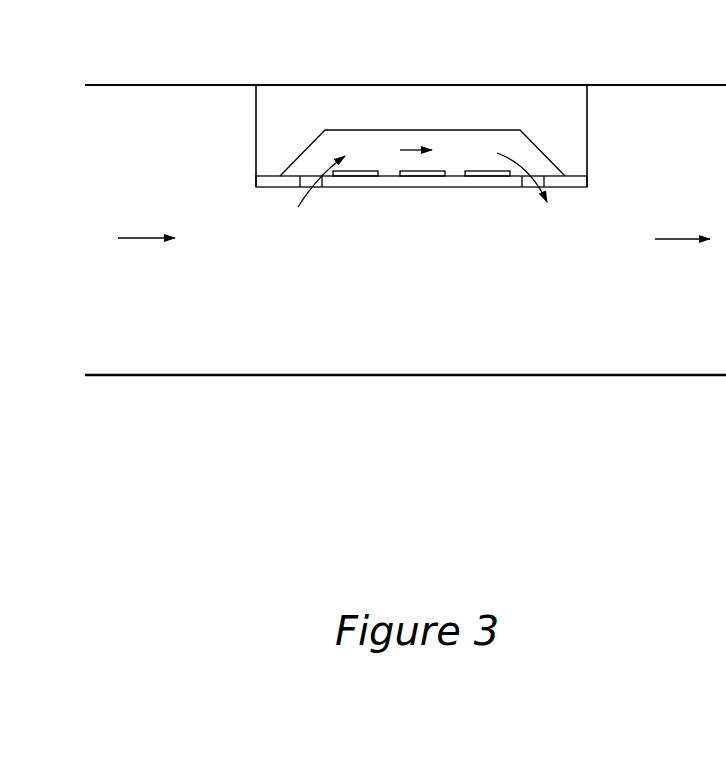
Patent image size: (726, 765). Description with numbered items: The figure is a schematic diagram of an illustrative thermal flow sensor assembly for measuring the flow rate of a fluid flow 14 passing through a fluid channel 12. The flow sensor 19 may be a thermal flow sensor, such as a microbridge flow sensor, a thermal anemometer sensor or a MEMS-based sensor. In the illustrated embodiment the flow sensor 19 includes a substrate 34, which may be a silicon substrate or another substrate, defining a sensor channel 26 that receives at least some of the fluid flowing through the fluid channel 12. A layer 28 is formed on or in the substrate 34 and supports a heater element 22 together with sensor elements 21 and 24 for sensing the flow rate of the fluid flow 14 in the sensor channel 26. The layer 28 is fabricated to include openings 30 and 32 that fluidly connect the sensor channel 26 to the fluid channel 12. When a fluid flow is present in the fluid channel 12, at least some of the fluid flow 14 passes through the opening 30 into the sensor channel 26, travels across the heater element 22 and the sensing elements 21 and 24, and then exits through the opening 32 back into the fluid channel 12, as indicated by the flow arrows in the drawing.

The fluid channel 12 is at (150, 118).
The fluid flow 14 is at (130, 240).
The flow sensor 19 is at (304, 98).
The sensor element 21 is at (370, 178).
The heater element 22 is at (420, 178).
The sensor element 24 is at (477, 178).
The sensor channel 26 is at (510, 140).
The layer 28 is at (256, 181).
The opening 30 is at (318, 186).
The opening 32 is at (528, 188).
The substrate 34 is at (256, 128).